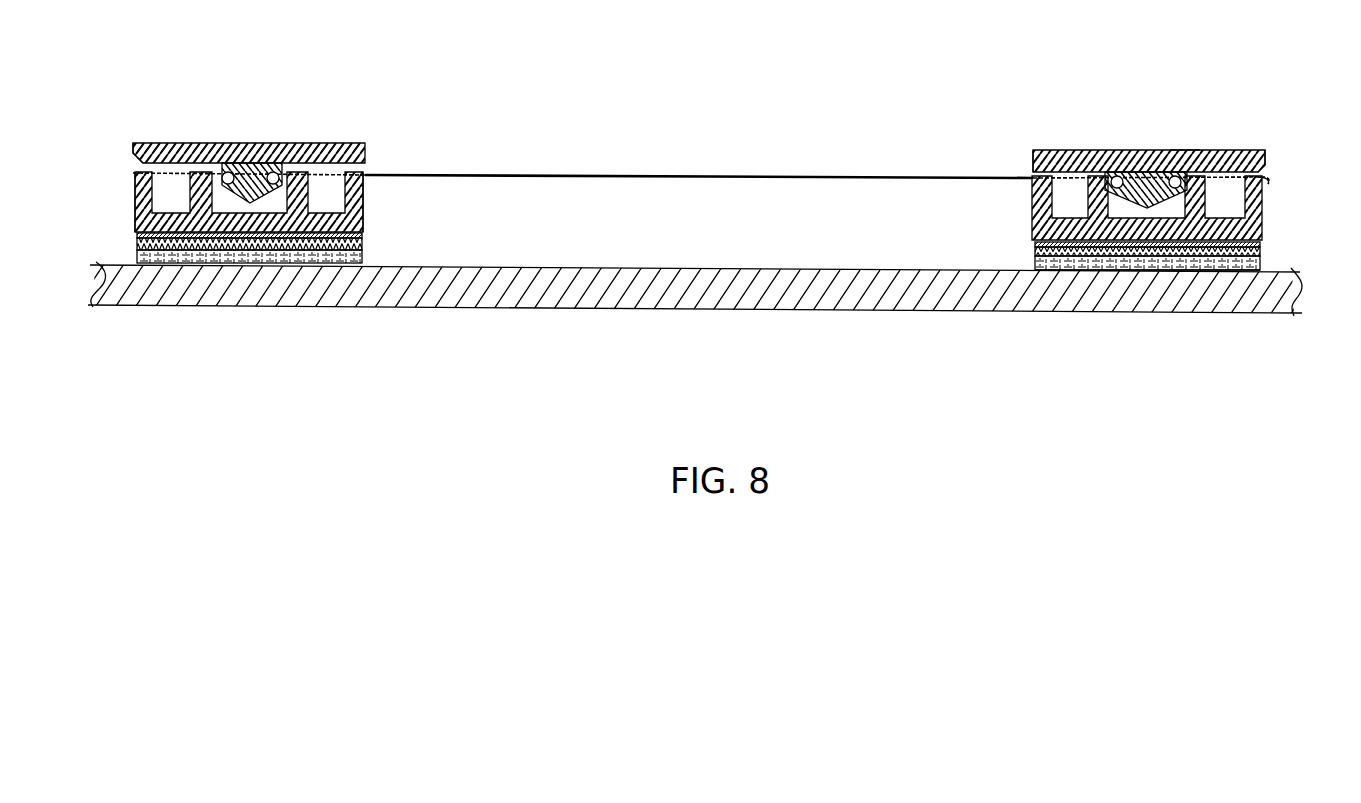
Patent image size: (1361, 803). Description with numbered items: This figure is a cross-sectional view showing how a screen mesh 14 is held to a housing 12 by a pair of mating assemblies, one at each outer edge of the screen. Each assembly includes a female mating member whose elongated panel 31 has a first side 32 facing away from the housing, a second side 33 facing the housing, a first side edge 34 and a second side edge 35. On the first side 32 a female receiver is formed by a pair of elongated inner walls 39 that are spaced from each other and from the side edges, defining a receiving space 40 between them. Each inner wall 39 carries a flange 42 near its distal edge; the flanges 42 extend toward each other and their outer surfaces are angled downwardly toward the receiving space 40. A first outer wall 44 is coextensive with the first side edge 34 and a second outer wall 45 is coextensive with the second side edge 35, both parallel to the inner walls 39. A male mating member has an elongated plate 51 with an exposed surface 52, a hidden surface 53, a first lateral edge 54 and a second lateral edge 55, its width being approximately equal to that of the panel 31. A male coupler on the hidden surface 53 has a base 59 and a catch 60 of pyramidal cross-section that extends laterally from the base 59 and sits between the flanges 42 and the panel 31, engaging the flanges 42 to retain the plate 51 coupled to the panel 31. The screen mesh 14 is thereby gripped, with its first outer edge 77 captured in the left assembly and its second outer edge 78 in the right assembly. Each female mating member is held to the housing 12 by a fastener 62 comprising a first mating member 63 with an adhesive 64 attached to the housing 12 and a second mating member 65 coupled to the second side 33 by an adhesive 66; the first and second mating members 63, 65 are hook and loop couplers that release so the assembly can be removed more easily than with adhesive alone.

The housing 12 is at (906, 300).
The screen mesh 14 is at (488, 172).
The elongated panel 31 is at (273, 226).
The first side 32 is at (328, 174).
The second side 33 is at (328, 232).
The first side edge 34 is at (365, 226).
The second side edge 35 is at (122, 230).
The elongated inner walls 39 is at (158, 171).
The receiving space 40 is at (227, 221).
The flanges 42 is at (224, 174).
The first outer wall 44 is at (132, 187).
The second outer wall 45 is at (366, 187).
The elongated plate 51 is at (1178, 152).
The exposed surface 52 is at (1207, 151).
The hidden surface 53 is at (1268, 176).
The first lateral edge 54 is at (1033, 162).
The second lateral edge 55 is at (1266, 171).
The base 59 is at (1140, 185).
The catch 60 is at (1106, 176).
The fasteners 62 is at (997, 244).
The first mating member 63 is at (1262, 264).
The adhesive 64 is at (1226, 262).
The second mating member 65 is at (1257, 254).
The adhesive 66 is at (1262, 248).
The first outer edge 77 is at (133, 172).
The second outer edge 78 is at (1264, 182).